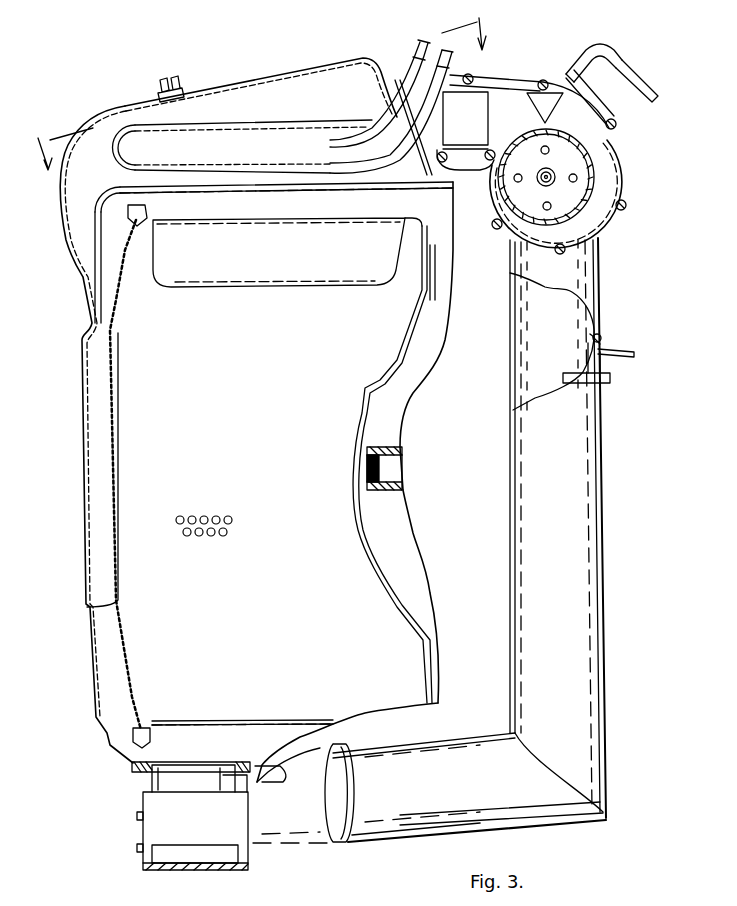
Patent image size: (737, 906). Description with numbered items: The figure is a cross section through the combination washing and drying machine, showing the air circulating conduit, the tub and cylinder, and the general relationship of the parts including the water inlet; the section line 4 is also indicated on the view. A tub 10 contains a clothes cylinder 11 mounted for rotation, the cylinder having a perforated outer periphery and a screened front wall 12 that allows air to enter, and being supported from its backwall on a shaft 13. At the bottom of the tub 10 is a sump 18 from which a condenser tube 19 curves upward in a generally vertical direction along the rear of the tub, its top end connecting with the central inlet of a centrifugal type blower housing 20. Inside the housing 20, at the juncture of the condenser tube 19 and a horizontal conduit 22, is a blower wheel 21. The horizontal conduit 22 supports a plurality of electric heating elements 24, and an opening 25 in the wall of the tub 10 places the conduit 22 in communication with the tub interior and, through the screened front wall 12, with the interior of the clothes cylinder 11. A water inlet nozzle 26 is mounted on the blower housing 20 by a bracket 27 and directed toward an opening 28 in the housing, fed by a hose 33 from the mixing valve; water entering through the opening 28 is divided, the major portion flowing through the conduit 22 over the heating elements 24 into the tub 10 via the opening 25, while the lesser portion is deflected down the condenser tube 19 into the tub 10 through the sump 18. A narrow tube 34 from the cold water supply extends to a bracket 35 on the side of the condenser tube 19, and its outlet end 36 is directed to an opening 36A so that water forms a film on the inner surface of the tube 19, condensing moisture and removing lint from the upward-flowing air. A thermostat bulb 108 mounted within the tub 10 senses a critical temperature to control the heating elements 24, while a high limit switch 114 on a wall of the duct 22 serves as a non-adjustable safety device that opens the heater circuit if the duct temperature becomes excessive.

The section line 4- 4 is at (254, 90).
The tub 10 is at (217, 190).
The clothes cylinder 11 is at (192, 724).
The screened front wall 12 is at (118, 286).
The shaft 13 is at (390, 470).
The sump 18 is at (161, 868).
The condenser tube 19 is at (588, 578).
The blower housing 20 is at (622, 200).
The blower wheel 21 is at (590, 169).
The horizontal conduit 22 is at (300, 75).
The electric heating elements 24 is at (265, 128).
The opening 25 is at (95, 250).
The nozzle 26 is at (605, 53).
The bracket 27 is at (615, 110).
The opening 28 is at (552, 84).
The hose 33 is at (652, 93).
The narrow tube 34 is at (634, 354).
The bracket 35 is at (612, 380).
The outlet end 36 is at (604, 340).
The opening 36A is at (590, 342).
The bulb 108 is at (355, 168).
The high limit switch 114 is at (183, 90).